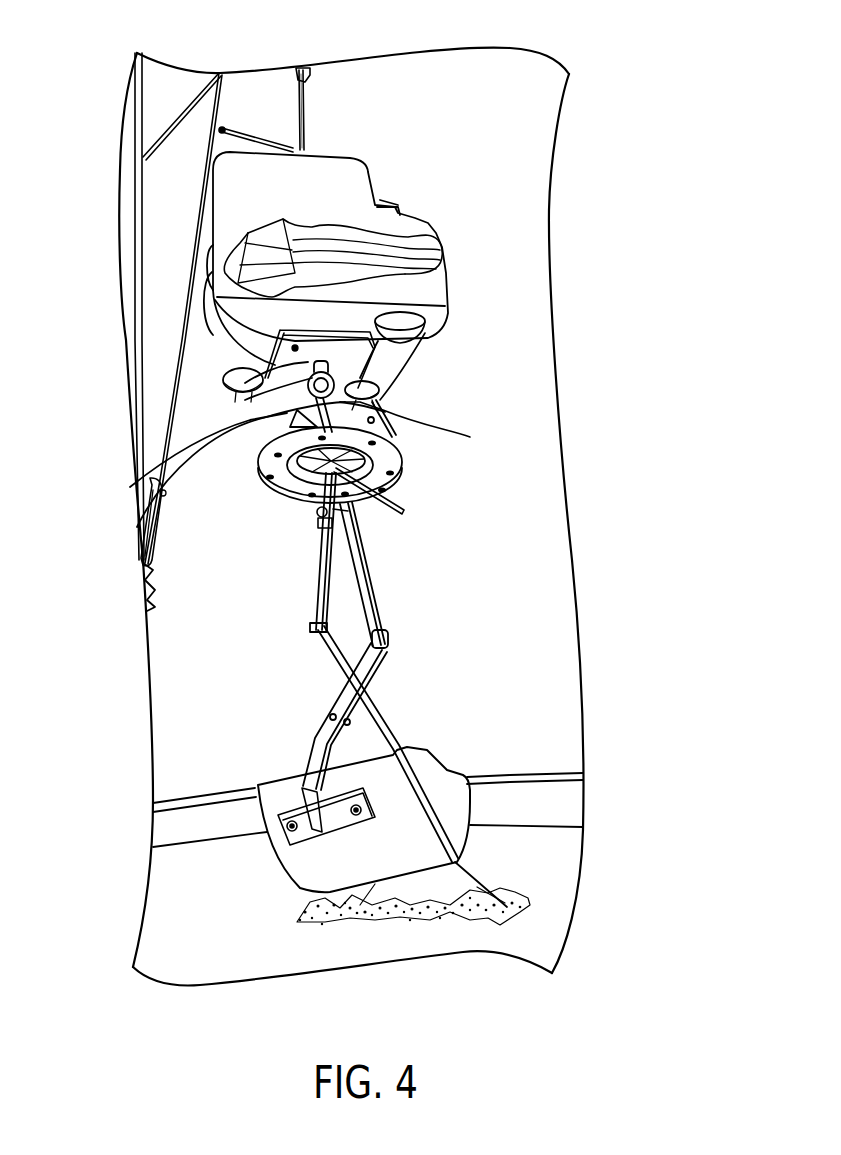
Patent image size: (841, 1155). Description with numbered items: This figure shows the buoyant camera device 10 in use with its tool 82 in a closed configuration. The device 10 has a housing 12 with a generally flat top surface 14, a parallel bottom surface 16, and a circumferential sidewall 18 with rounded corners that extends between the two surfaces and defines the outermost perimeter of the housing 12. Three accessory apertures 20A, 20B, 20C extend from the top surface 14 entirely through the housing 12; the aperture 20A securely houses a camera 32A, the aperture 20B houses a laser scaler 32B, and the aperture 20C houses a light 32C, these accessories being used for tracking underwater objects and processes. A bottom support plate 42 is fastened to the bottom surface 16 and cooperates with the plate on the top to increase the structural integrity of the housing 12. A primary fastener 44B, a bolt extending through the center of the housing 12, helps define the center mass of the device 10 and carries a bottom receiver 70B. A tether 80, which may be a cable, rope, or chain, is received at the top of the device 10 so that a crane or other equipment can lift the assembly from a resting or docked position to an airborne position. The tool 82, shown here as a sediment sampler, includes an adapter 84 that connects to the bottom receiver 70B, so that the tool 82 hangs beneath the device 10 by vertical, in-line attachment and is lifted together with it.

The buoyant camera device 10 is at (458, 297).
The housing 12 is at (294, 180).
The top surface 14 is at (227, 147).
The bottom surface 16 is at (428, 387).
The circumferential sidewall 18 is at (343, 182).
The accessory aperture 20A is at (425, 333).
The accessory aperture 20B is at (376, 398).
The accessory aperture 20C is at (213, 383).
The camera 32A is at (403, 357).
The laser scaler 32B is at (378, 413).
The light 32C is at (240, 388).
The bottom support plate 42 is at (280, 358).
The primary fastener 44B is at (155, 480).
The bottom receiver 70B is at (147, 537).
The tether 80 is at (307, 117).
The tool 82 is at (383, 641).
The adapter 84 is at (373, 480).